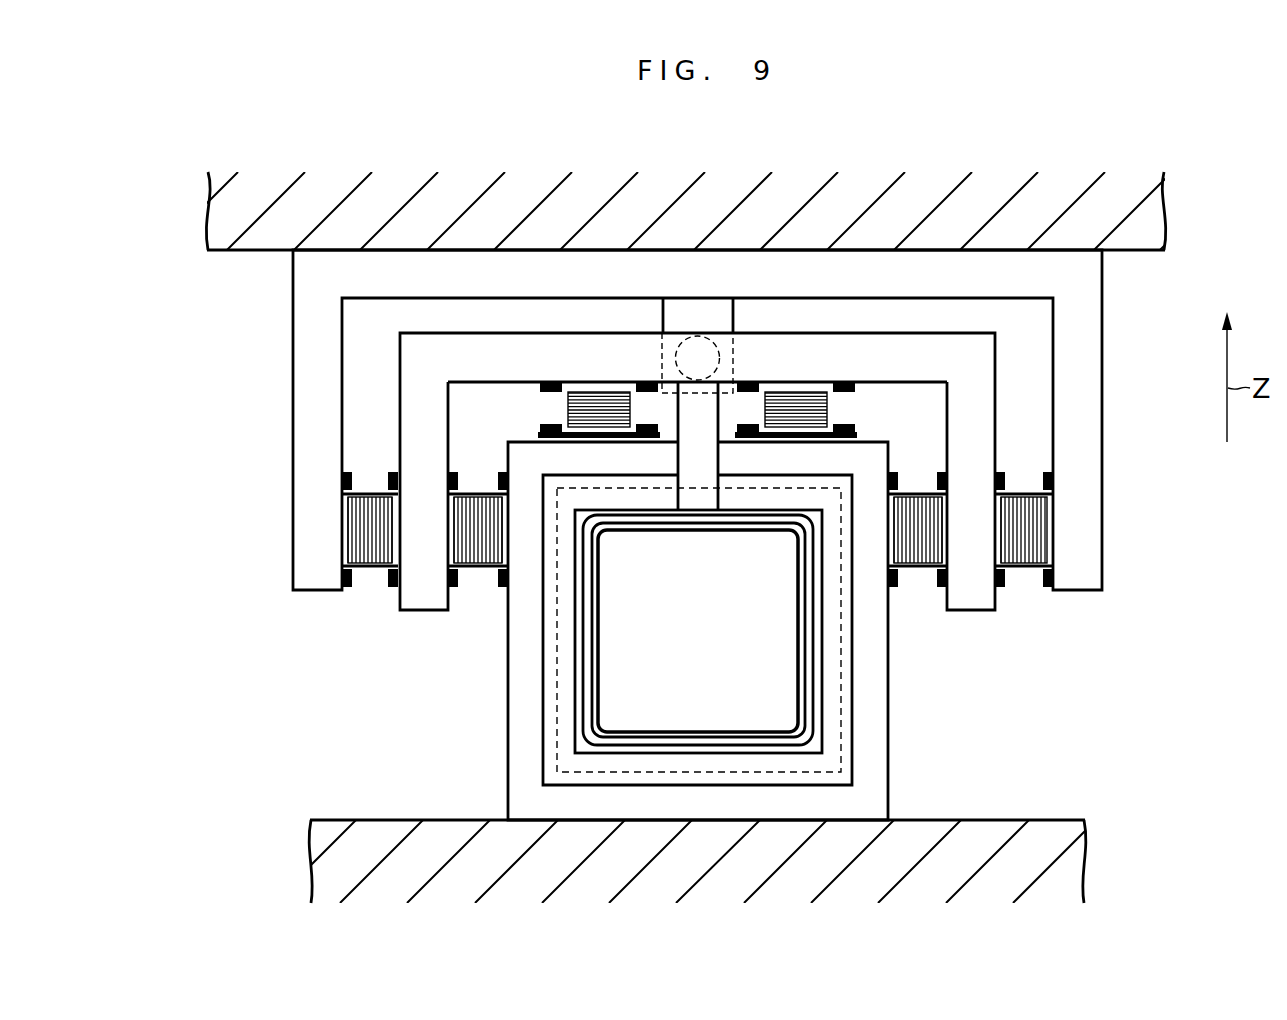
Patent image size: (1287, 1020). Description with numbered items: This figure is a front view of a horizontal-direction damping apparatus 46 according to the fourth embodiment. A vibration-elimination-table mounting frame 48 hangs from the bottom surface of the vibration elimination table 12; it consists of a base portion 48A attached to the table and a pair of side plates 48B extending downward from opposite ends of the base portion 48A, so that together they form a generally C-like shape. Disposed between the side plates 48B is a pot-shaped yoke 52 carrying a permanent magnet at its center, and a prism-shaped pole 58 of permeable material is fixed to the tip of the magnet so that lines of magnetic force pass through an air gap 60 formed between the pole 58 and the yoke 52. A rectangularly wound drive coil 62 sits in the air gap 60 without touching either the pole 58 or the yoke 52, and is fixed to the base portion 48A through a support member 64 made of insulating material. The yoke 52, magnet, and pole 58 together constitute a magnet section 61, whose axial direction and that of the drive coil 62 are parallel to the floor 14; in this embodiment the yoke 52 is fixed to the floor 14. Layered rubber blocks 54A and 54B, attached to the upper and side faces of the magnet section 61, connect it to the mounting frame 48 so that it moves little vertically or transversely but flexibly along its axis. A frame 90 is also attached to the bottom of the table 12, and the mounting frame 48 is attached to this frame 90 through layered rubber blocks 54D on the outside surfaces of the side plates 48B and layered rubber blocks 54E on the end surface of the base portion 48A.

The vibration elimination table 12 is at (245, 252).
The floor 14 is at (372, 819).
The horizontal-direction damping apparatus 46 is at (1152, 553).
The vibration-elimination-table mounting frame 48 is at (749, 511).
The base portion 48A is at (399, 357).
The side plates 48B is at (420, 612).
The yoke 52 is at (753, 631).
The layered rubber blocks 54A is at (567, 410).
The layered rubber blocks 54B is at (486, 566).
The layered rubber blocks 54D is at (368, 566).
The layered rubber blocks 54E is at (672, 357).
The pole 58 is at (615, 700).
The air gap 60 is at (813, 746).
The magnet section 61 is at (890, 703).
The drive coil 62 is at (586, 666).
The support member 64 is at (712, 430).
The frame 90 is at (1108, 427).